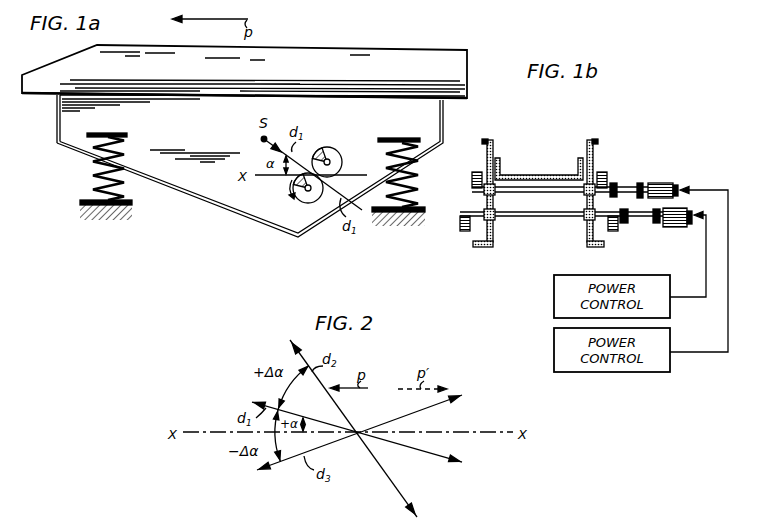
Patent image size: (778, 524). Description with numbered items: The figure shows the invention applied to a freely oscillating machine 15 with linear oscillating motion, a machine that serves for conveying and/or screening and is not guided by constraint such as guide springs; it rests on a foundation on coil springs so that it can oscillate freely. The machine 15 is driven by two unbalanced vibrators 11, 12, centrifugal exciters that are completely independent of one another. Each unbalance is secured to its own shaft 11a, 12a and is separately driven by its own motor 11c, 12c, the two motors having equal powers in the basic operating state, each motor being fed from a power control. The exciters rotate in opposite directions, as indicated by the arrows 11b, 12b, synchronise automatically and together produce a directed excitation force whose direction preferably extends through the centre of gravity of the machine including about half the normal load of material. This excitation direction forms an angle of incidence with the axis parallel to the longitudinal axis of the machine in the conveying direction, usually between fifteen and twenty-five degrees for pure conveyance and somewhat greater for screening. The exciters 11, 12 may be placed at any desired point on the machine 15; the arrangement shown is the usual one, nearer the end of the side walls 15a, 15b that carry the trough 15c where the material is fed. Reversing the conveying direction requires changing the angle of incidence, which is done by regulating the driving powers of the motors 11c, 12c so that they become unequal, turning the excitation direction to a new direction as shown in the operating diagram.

In FIG. 1a, the machine 15 is at (349, 54).
In FIG. 1b, the machine 15 is at (511, 142).
In FIG. 1a, the side wall 15a is at (187, 181).
In FIG. 1b, the side wall 15a is at (596, 141).
In FIG. 1b, the side wall 15b is at (486, 140).
In FIG. 1a, the trough 15c is at (33, 88).
In FIG. 1b, the trough 15c is at (541, 176).
In FIG. 1a, the unbalanced vibrator 11 is at (343, 146).
In FIG. 1b, the unbalanced vibrator 11 is at (474, 172).
In FIG. 1a, the shaft 11a is at (332, 162).
In FIG. 1b, the shaft 11a is at (528, 193).
In FIG. 1a, the arrow of rotation 11b is at (309, 154).
In FIG. 1b, the driving motor 11c is at (661, 182).
In FIG. 1a, the unbalanced vibrator 12 is at (301, 219).
In FIG. 1b, the unbalanced vibrator 12 is at (465, 231).
In FIG. 1a, the shaft 12a is at (318, 202).
In FIG. 1b, the shaft 12a is at (526, 218).
In FIG. 1a, the arrow of rotation 12b is at (292, 192).
In FIG. 1b, the driving motor 12c is at (676, 228).